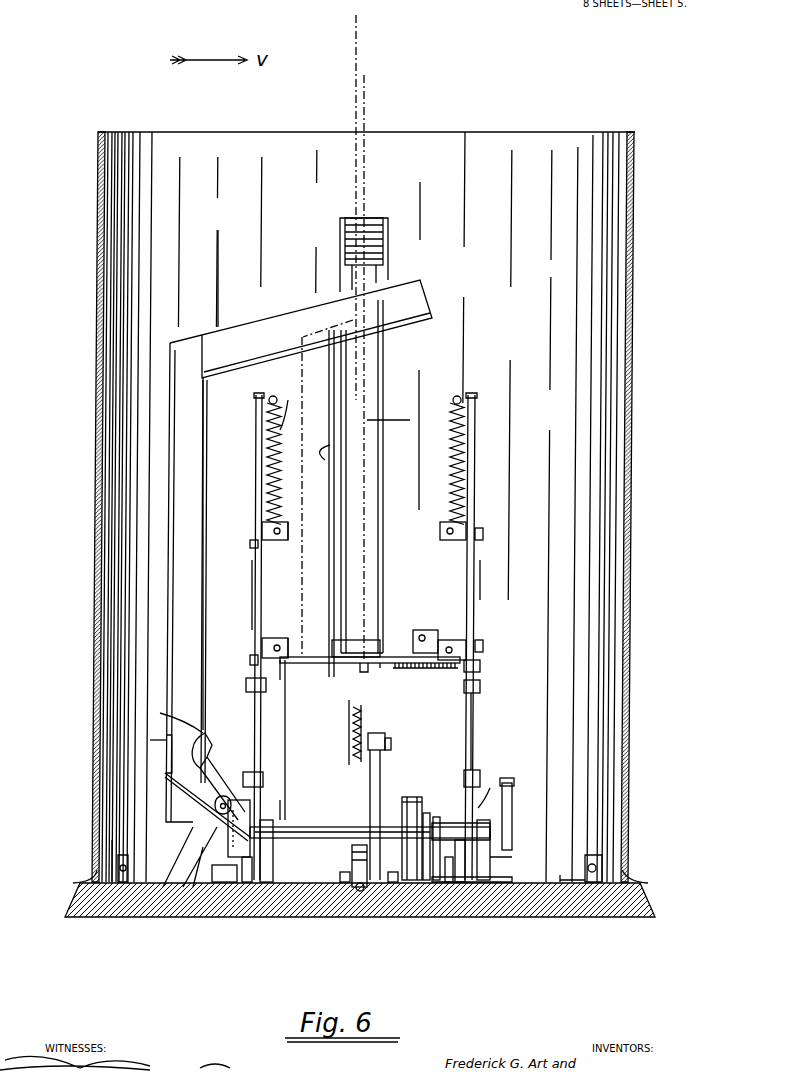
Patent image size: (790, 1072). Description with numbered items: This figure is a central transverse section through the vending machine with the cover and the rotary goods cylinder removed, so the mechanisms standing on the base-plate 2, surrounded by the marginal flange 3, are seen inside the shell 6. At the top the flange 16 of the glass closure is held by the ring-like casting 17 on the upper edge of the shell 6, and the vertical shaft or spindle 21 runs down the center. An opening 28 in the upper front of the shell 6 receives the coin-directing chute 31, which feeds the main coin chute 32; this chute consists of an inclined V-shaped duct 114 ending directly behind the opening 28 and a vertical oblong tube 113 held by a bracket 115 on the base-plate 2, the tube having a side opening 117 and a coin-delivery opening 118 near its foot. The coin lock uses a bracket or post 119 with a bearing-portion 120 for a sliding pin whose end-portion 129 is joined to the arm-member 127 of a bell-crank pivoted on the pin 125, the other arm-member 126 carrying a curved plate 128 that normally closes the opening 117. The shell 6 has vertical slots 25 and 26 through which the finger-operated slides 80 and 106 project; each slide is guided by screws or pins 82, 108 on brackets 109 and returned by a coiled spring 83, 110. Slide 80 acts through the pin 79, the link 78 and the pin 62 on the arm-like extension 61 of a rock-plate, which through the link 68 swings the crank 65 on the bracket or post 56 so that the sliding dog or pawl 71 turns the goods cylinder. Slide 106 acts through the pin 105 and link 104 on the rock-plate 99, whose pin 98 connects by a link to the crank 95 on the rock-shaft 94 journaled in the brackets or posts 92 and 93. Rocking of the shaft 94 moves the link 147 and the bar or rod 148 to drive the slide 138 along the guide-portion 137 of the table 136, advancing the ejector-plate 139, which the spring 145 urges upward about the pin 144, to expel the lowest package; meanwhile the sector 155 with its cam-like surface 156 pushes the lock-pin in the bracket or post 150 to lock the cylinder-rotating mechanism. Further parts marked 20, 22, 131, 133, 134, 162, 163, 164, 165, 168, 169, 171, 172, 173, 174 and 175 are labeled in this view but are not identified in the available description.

The base-plate 2 is at (554, 888).
The marginal flange 3 is at (648, 880).
The shell 6 is at (630, 218).
The marginal flange 16 is at (312, 720).
The ring-like element or casting 17 is at (361, 364).
The bearing bolt 20 is at (392, 882).
The shaft or spindle 21 is at (352, 855).
The bearing pin 22 is at (360, 892).
The vertical slot 25 is at (478, 427).
The vertical slot 26 is at (256, 455).
The opening 28 is at (378, 270).
The coin-directing chute 31 is at (365, 238).
The main coin-delivering chute 32 is at (240, 278).
The bracket or post 56 is at (440, 817).
The arm-like extension 61 is at (501, 774).
The pivot or pin 62 is at (472, 770).
The crank 65 is at (432, 815).
The link 68 is at (448, 882).
The actuating dog or pawl 71 is at (415, 815).
The link 78 is at (476, 715).
The pivot or pin 79 is at (480, 683).
The reciprocatory slide 80 is at (478, 562).
The screws or pins 82 is at (483, 623).
The coiled spring 83 is at (452, 432).
The bracket or post 92 is at (268, 885).
The bracket or post 93 is at (505, 857).
The rock-shaft 94 is at (345, 825).
The crank 95 is at (247, 885).
The pivot or pin 98 is at (288, 745).
The rock-plate 99 is at (285, 783).
The link 104 is at (246, 684).
The pivot or pin 105 is at (252, 665).
The reciprocatory slide 106 is at (256, 551).
The screws or pins 108 is at (262, 645).
The brackets 109 is at (286, 605).
The coiled spring 110 is at (278, 402).
The vertical tubing part of coin chute 113 is at (185, 492).
The inclined duct part of coin chute 114 is at (410, 300).
The bracket 115 is at (150, 865).
The opening 117 is at (164, 712).
The coin-delivery opening 118 is at (150, 740).
The bracket or post 119 is at (232, 885).
The bearing-portion 120 is at (263, 782).
The pin or pivot 125 is at (198, 813).
The arm-member 126 is at (215, 762).
The arm-member 127 is at (163, 890).
The curved plate 128 is at (215, 735).
The end-portion of pin 129 is at (196, 890).
The rod 131 is at (256, 588).
The lever 133 is at (205, 775).
The lever 134 is at (215, 800).
The table 136 is at (370, 775).
The guide-portion 137 is at (385, 740).
The slide 138 is at (365, 735).
The ejector-plate 139 is at (378, 668).
The pin 144 is at (352, 718).
The spring 145 is at (352, 740).
The link 147 is at (392, 815).
The bar or rod 148 is at (390, 746).
The bracket or post 150 is at (486, 882).
The sector 155 is at (514, 786).
The cam-like surface 156 is at (510, 783).
The spring end 162 is at (310, 412).
The spring end 163 is at (308, 477).
The rod 164 is at (340, 538).
The bracket 165 is at (425, 630).
The nut 168 is at (480, 665).
The rack 169 is at (405, 668).
The pin 171 is at (353, 678).
The cross bar 172 is at (305, 664).
The cross piece 173 is at (348, 650).
The box 174 is at (370, 640).
The rod 175 is at (383, 462).